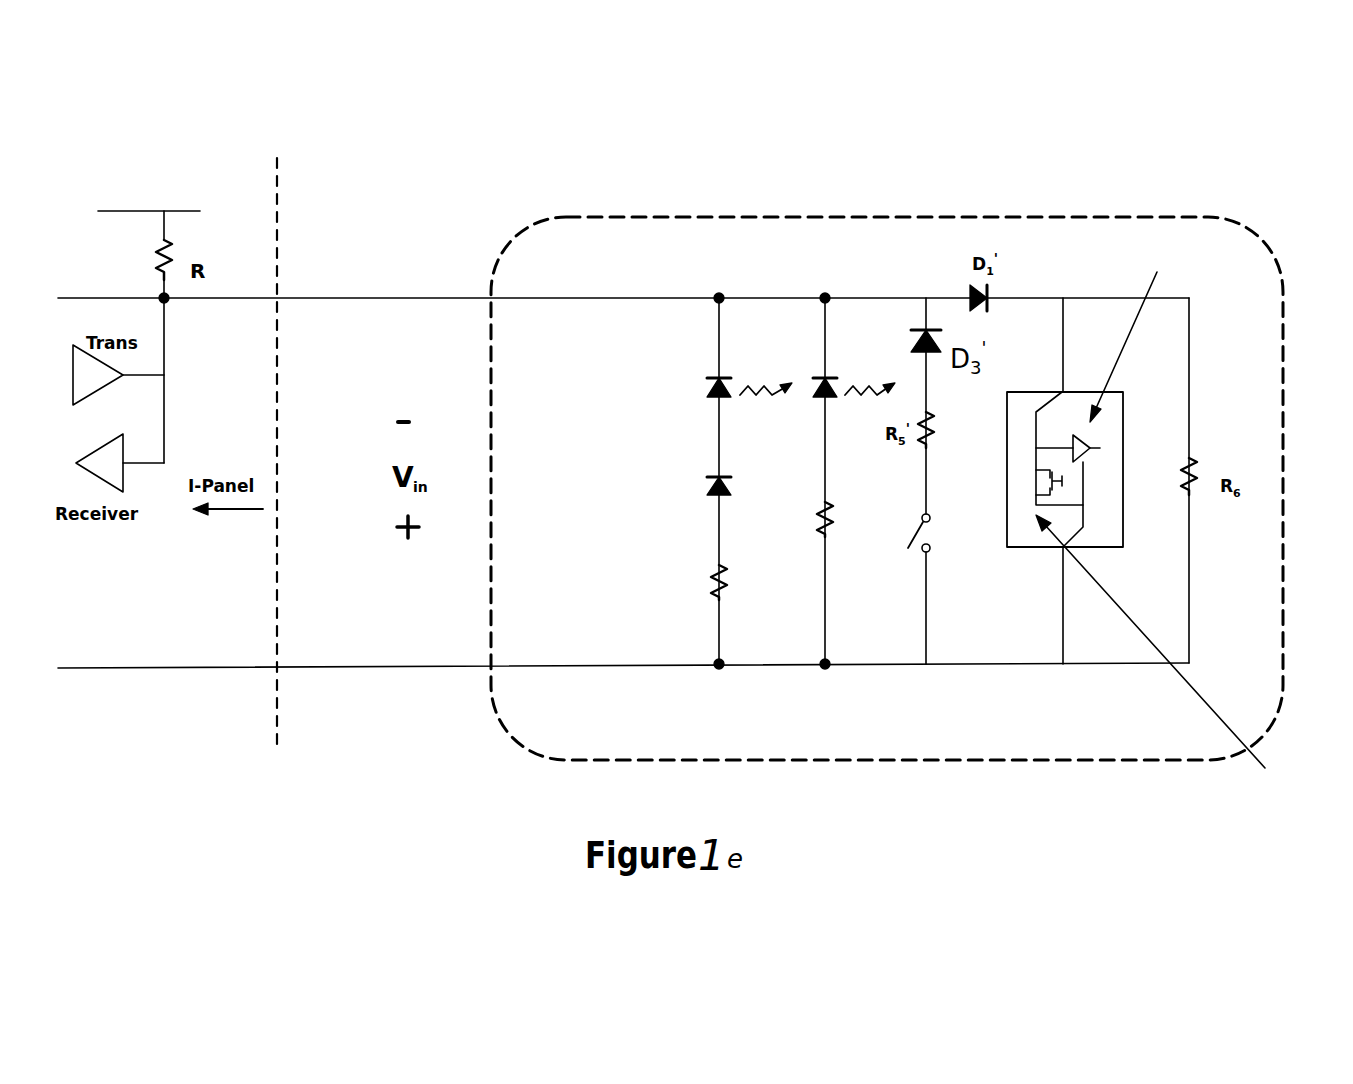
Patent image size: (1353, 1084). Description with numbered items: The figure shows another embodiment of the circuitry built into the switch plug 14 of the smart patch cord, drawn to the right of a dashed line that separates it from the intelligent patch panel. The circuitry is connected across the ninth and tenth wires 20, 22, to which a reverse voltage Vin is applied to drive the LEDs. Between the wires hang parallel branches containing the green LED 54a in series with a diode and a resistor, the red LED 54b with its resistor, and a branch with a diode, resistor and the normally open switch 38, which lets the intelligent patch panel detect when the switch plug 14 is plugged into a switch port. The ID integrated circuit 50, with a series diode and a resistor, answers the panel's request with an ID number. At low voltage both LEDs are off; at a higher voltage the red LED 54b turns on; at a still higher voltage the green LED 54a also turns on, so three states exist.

The ninth wire 20 is at (352, 299).
The tenth wire 22 is at (338, 668).
The switch plug 14 is at (973, 760).
The green LED 54a is at (718, 397).
The red LED 54b is at (823, 378).
The ID integrated circuit 50 is at (1080, 392).
The normally open switch 38 is at (935, 528).